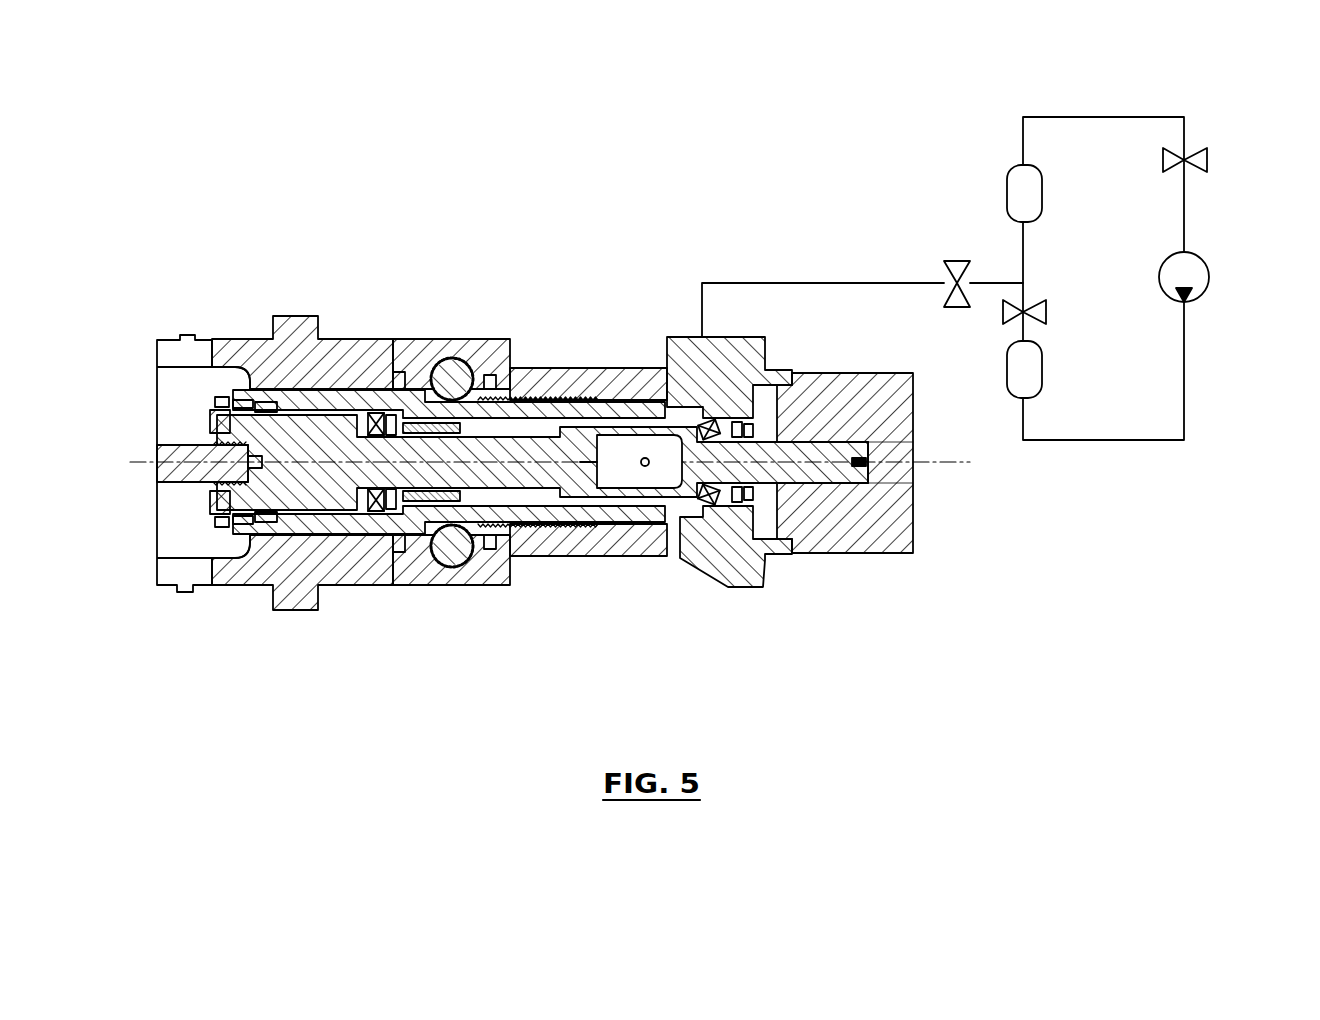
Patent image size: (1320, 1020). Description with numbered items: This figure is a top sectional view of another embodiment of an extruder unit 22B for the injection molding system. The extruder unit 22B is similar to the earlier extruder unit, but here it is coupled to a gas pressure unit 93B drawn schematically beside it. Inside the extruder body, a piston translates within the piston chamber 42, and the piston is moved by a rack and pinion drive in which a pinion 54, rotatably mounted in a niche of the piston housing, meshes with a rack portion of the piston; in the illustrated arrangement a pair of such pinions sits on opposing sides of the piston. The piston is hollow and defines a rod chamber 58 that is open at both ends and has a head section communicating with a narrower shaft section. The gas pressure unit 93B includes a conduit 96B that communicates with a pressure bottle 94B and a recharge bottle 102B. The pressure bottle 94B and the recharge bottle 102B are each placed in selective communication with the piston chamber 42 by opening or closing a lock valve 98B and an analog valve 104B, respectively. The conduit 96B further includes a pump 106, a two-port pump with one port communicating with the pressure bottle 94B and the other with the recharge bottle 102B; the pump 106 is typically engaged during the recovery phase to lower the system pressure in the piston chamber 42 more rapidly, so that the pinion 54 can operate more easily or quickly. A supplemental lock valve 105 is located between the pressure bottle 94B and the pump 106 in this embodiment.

The extruder unit 22B is at (535, 502).
The piston chamber 42 is at (550, 538).
The pinion 54 is at (442, 339).
The rod chamber 58 is at (672, 512).
The gas pressure unit 93B is at (755, 136).
The conduit 96B is at (825, 283).
The lock valve 98B is at (946, 277).
The pressure bottle 94B is at (1042, 193).
The recharge bottle 102B is at (1042, 380).
The analog valve 104B is at (1046, 312).
The supplemental lock valve 105 is at (1207, 160).
The pump 106 is at (1208, 268).